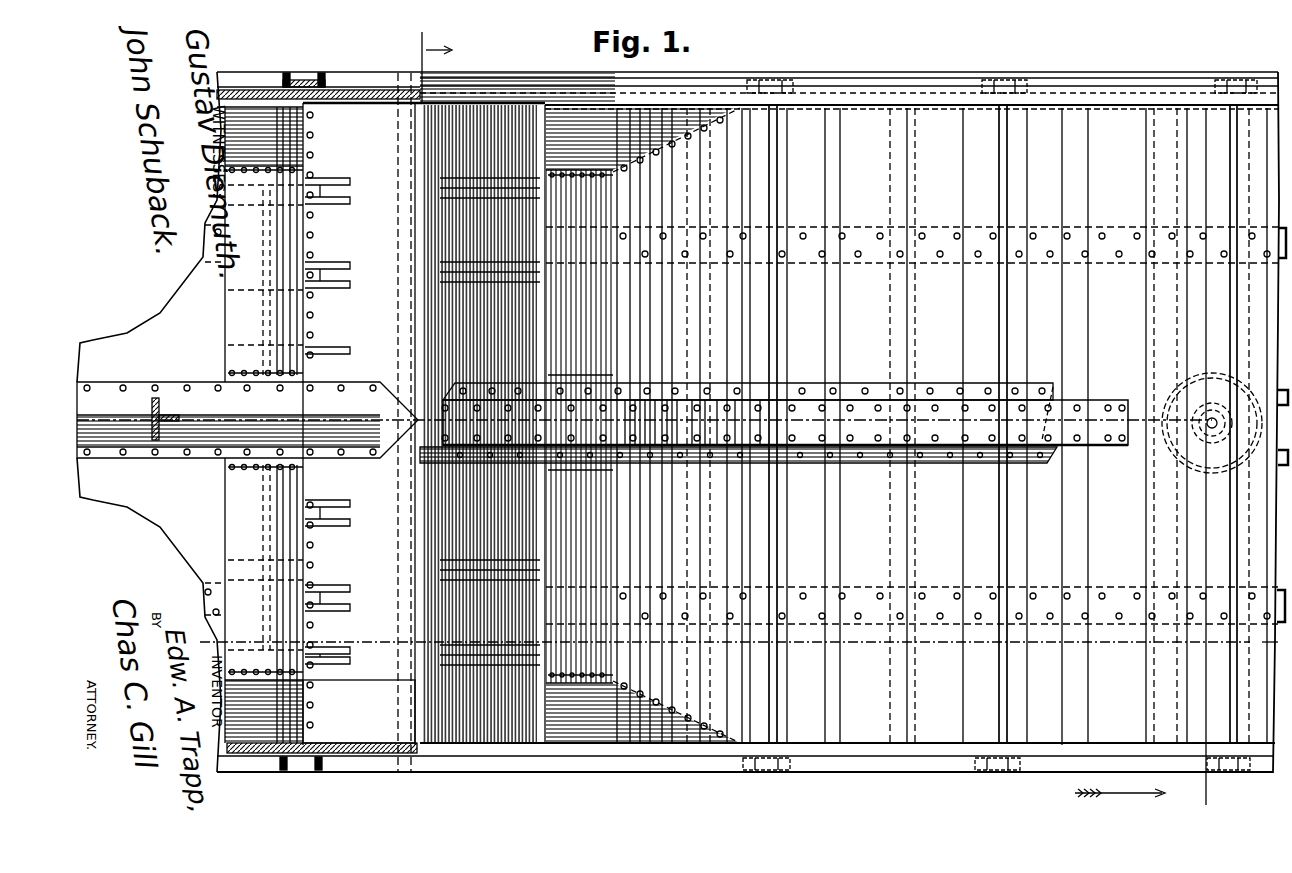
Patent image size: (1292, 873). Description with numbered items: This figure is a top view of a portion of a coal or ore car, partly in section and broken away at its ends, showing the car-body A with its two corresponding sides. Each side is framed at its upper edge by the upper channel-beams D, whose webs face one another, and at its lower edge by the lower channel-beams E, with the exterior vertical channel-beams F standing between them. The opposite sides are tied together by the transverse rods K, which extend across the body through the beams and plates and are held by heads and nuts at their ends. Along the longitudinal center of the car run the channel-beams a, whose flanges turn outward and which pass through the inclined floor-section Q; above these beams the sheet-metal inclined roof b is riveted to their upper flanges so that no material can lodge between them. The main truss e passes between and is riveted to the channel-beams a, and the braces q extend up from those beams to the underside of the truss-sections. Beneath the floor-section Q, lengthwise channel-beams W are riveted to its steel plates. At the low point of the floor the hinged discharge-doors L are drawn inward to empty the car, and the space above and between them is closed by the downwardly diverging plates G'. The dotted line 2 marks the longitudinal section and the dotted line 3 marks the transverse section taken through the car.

The car-body A is at (678, 410).
The lower channel-beams E is at (262, 88).
The exterior vertical channel-beams F is at (305, 73).
The section line 3 3 is at (817, 429).
The section line 2 2 is at (1275, 652).
The discharge-doors L is at (733, 422).
The transverse rods K is at (778, 340).
The channel-beams W is at (1055, 264).
The truss e is at (838, 405).
The inclined roof b is at (945, 458).
The braces q is at (173, 416).
The channel-beams a is at (1227, 425).
The upper channel-beams D is at (1062, 85).
The plates G' is at (420, 711).
The floor-section Q is at (1117, 692).